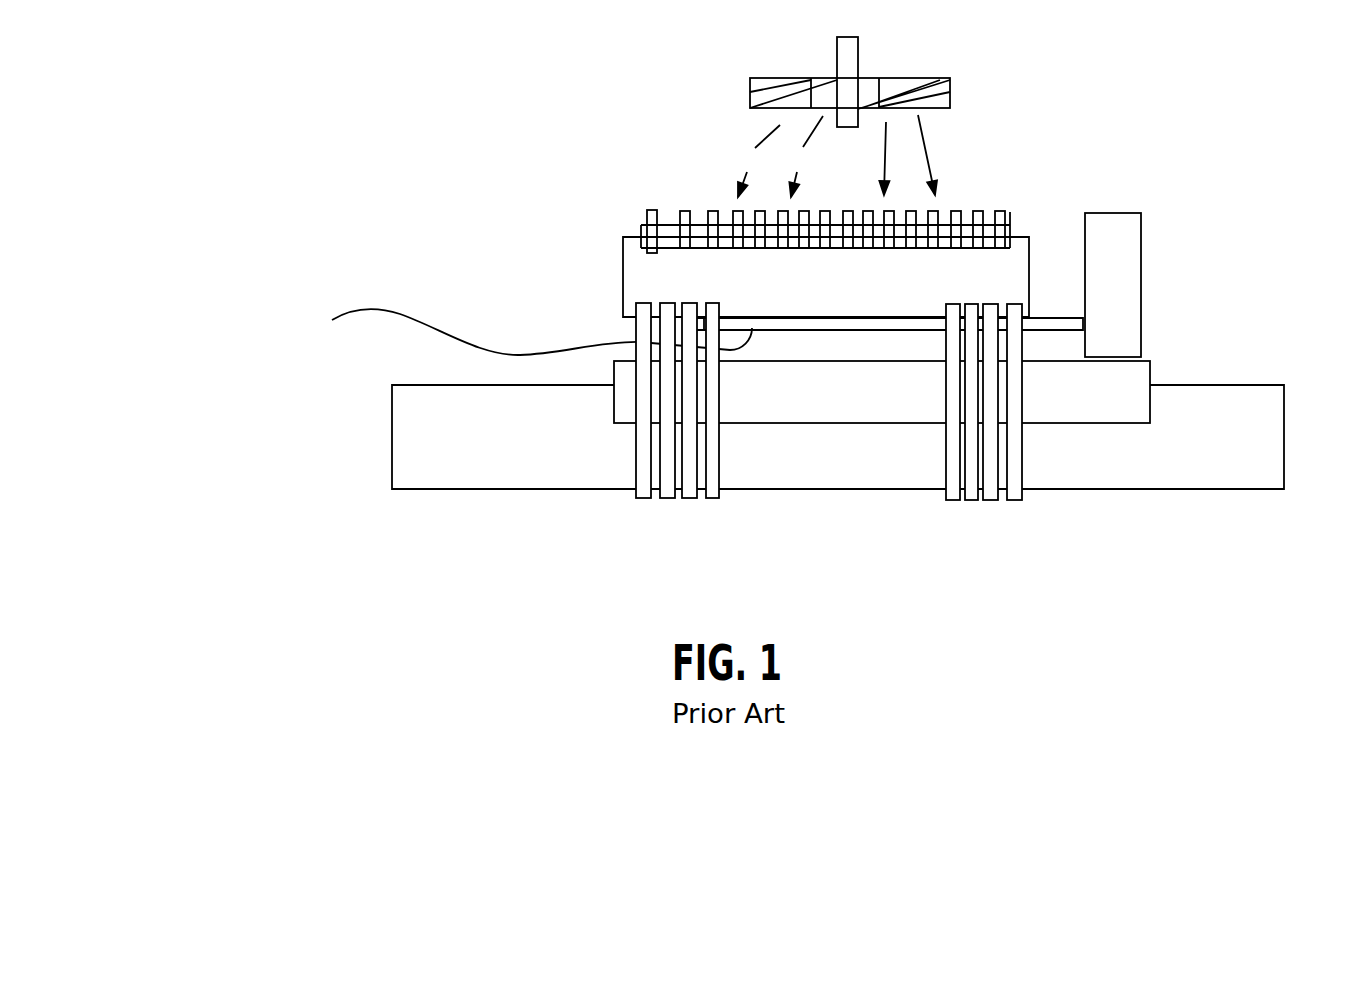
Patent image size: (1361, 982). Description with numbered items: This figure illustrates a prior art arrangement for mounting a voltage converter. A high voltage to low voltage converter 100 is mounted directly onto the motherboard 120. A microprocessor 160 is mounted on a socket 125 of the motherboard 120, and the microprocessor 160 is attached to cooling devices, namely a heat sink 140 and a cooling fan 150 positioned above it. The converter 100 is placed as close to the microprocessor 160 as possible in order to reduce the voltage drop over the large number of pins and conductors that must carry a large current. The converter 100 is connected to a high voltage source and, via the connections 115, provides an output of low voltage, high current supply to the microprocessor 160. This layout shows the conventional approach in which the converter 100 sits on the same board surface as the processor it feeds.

The voltage converter 100 is at (1141, 278).
The low supply voltage connections 115 is at (462, 333).
The motherboard 120 is at (1280, 457).
The socket 125 is at (915, 413).
The heat sink 140 is at (644, 201).
The cooling fan 150 is at (900, 117).
The microprocessor 160 is at (958, 295).